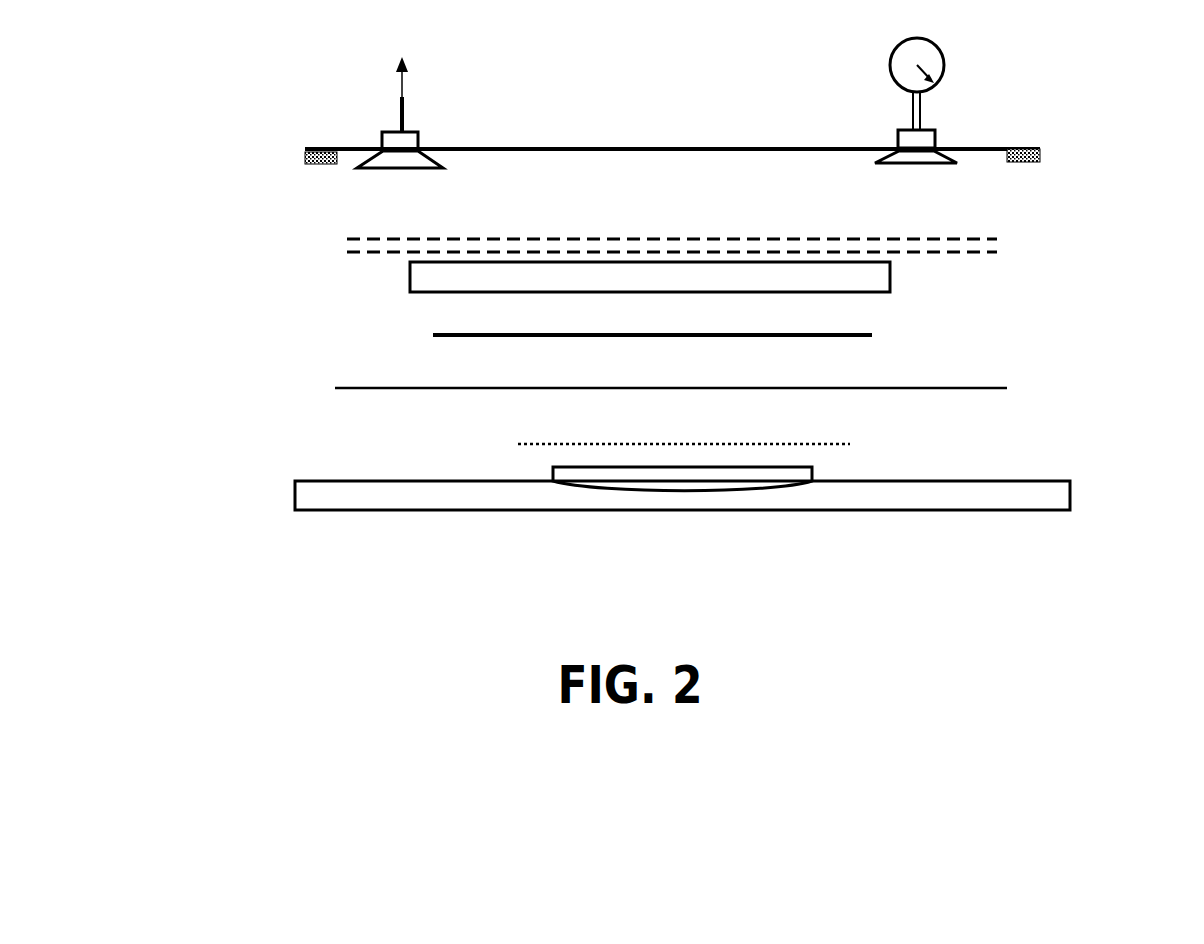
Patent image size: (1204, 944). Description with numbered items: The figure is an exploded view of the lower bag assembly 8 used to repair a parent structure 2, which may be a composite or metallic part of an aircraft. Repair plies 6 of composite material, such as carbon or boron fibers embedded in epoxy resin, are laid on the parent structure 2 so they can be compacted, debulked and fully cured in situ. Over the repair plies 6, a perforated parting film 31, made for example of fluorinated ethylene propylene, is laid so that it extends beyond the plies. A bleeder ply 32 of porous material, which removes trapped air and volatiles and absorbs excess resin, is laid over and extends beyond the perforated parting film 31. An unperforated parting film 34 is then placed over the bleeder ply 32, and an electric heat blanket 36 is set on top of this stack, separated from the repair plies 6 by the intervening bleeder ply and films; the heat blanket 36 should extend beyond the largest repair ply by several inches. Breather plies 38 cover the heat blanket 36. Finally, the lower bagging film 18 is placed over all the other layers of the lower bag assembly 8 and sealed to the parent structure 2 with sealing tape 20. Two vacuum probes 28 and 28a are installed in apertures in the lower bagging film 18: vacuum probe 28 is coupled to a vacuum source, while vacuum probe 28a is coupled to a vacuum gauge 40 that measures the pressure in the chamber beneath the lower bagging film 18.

The parent structure 2 is at (417, 510).
The repair plies 6 is at (797, 483).
The lower bag assembly 8 is at (265, 322).
The lower bagging film 18 is at (658, 149).
The sealing tape 20 is at (307, 163).
The vacuum probe 28 is at (420, 147).
The vacuum probe 28a is at (937, 138).
The perforated parting film 31 is at (802, 443).
The bleeder ply 32 is at (967, 387).
The unperforated parting film 34 is at (833, 332).
The heat blanket 36 is at (890, 279).
The breather plies 38 is at (997, 239).
The vacuum gauge 40 is at (932, 43).